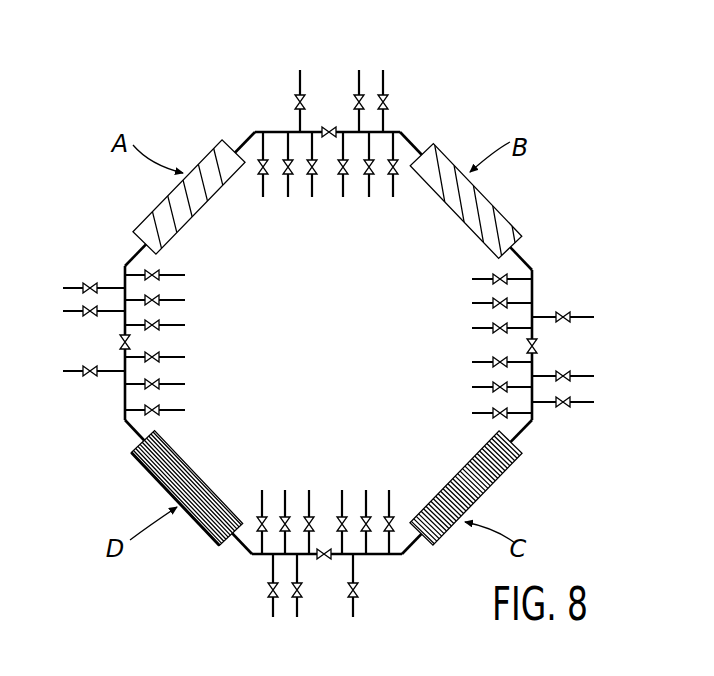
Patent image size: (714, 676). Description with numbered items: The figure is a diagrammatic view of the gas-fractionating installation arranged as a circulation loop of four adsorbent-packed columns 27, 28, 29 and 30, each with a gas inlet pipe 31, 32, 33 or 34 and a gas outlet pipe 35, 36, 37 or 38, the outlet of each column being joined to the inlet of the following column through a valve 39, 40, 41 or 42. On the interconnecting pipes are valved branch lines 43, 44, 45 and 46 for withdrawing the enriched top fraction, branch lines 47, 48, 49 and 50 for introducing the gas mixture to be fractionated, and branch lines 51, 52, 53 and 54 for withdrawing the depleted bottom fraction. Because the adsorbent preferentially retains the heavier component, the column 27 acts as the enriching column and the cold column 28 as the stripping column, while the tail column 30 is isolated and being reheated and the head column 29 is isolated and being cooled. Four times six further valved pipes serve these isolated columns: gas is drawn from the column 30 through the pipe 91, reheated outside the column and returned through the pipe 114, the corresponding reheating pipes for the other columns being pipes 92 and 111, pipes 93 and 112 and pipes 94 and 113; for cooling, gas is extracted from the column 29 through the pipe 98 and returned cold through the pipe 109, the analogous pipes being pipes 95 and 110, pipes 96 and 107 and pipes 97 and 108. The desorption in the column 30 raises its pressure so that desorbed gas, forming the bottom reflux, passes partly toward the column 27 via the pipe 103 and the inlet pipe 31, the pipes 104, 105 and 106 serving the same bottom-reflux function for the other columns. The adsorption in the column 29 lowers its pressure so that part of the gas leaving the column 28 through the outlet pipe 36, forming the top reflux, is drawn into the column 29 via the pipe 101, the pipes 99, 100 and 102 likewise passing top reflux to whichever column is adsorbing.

The column 27 is at (158, 222).
The column 28 is at (483, 203).
The column 29 is at (493, 487).
The column 30 is at (158, 472).
The gas inlet pipe 31 is at (136, 255).
The gas inlet pipe 32 is at (414, 152).
The gas inlet pipe 33 is at (522, 440).
The gas inlet pipe 34 is at (240, 545).
The gas outlet pipe 35 is at (240, 147).
The gas outlet pipe 36 is at (523, 258).
The gas outlet pipe 37 is at (408, 548).
The gas outlet pipe 38 is at (128, 427).
The valve 39 is at (118, 338).
The valve 40 is at (329, 128).
The valve 41 is at (537, 344).
The valve 42 is at (324, 558).
The branch line 43 is at (80, 372).
The branch line 44 is at (300, 72).
The branch line 45 is at (577, 317).
The branch line 46 is at (353, 610).
The branch line 47 is at (80, 311).
The branch line 48 is at (359, 72).
The branch line 49 is at (580, 378).
The branch line 50 is at (297, 617).
The branch line 51 is at (80, 287).
The branch line 52 is at (383, 72).
The branch line 53 is at (580, 405).
The branch line 54 is at (273, 617).
The pipe 91 is at (170, 412).
The pipe 92 is at (262, 180).
The pipe 93 is at (490, 277).
The pipe 94 is at (389, 495).
The pipe 95 is at (172, 383).
The pipe 96 is at (284, 188).
The pipe 97 is at (482, 303).
The pipe 98 is at (366, 493).
The pipe 99 is at (174, 356).
The pipe 100 is at (312, 188).
The pipe 101 is at (488, 330).
The pipe 102 is at (420, 400).
The pipe 103 is at (176, 325).
The pipe 104 is at (343, 195).
The pipe 105 is at (490, 362).
The pipe 106 is at (309, 498).
The pipe 107 is at (180, 298).
The pipe 108 is at (369, 195).
The pipe 109 is at (480, 390).
The pipe 110 is at (285, 490).
The pipe 111 is at (163, 273).
The pipe 112 is at (393, 187).
The pipe 113 is at (480, 413).
The pipe 114 is at (260, 505).